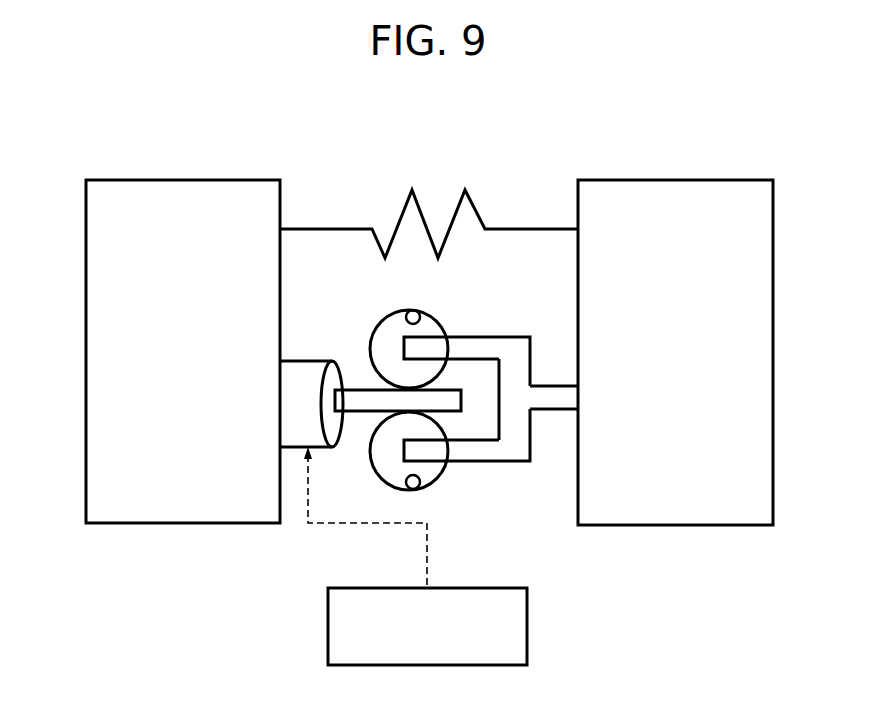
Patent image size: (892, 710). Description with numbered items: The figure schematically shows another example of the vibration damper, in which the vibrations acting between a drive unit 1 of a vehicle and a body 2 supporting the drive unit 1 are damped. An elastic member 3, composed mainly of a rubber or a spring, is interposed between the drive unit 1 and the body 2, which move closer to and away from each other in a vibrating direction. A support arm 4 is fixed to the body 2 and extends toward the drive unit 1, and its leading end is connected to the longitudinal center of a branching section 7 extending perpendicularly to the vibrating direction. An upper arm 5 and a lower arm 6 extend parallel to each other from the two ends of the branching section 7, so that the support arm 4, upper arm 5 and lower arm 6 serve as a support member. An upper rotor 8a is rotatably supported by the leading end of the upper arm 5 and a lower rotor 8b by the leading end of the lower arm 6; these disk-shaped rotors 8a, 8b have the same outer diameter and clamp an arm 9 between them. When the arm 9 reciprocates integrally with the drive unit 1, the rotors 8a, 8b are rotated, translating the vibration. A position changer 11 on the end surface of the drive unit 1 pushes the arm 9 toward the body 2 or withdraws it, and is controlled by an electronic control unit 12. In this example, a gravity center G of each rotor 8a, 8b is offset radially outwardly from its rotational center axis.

The drive unit 1 is at (186, 180).
The body 2 is at (683, 180).
The elastic member 3 is at (412, 193).
The support arm 4 is at (555, 397).
The upper arm 5 is at (486, 343).
The lower arm 6 is at (510, 452).
The branching section 7 is at (520, 437).
The upper rotor 8a is at (437, 323).
The lower rotor 8b is at (438, 480).
The arm 9 is at (365, 395).
The position changer 11 is at (302, 367).
The electronic control unit 12 is at (528, 627).
The gravity center G is at (403, 310).